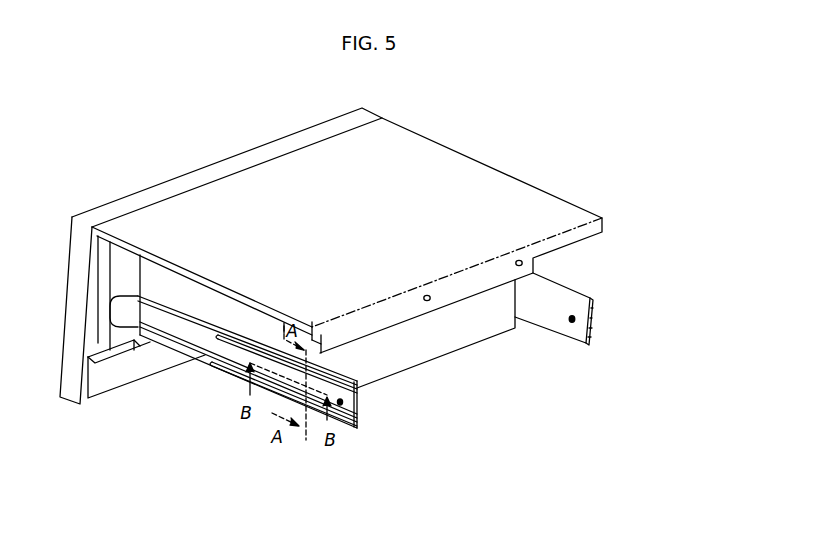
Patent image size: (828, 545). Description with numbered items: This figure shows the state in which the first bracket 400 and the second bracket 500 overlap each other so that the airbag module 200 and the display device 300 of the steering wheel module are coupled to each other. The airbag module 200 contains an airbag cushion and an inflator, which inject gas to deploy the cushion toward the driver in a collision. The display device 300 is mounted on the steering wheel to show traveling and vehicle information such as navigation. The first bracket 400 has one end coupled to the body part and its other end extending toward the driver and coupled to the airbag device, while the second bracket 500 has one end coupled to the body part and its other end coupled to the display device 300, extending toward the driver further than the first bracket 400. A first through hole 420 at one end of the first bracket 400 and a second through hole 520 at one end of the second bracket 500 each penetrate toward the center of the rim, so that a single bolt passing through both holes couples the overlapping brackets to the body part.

The airbag module 200 is at (419, 352).
The display device 300 is at (202, 170).
The first bracket 400 is at (566, 300).
The first through hole 420 is at (571, 323).
The second bracket 500 is at (207, 343).
The second through hole 520 is at (338, 428).